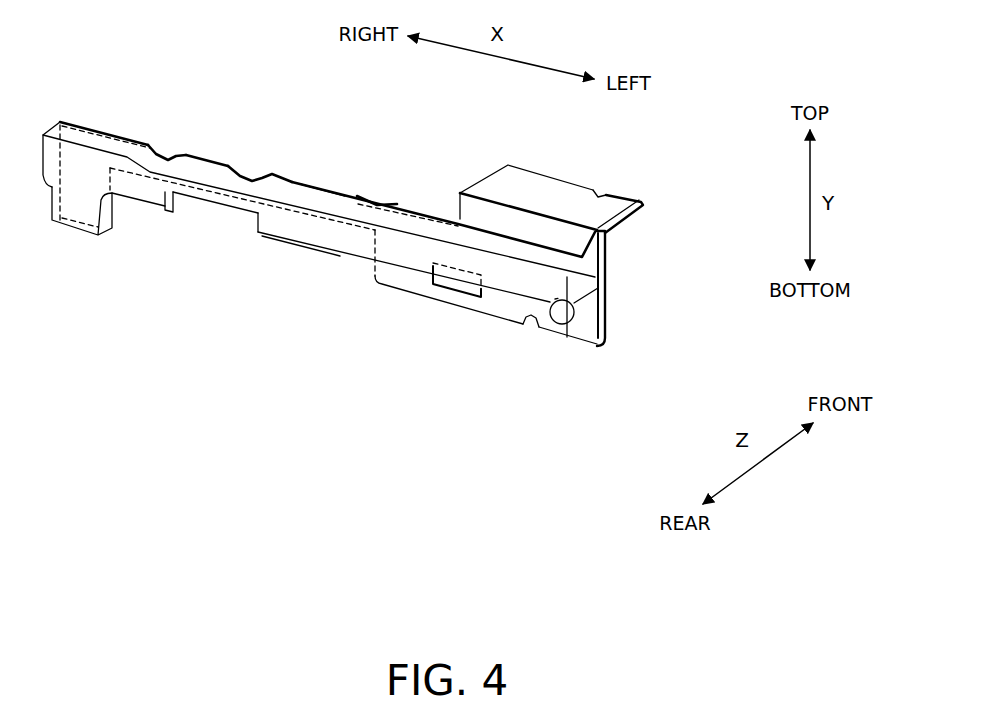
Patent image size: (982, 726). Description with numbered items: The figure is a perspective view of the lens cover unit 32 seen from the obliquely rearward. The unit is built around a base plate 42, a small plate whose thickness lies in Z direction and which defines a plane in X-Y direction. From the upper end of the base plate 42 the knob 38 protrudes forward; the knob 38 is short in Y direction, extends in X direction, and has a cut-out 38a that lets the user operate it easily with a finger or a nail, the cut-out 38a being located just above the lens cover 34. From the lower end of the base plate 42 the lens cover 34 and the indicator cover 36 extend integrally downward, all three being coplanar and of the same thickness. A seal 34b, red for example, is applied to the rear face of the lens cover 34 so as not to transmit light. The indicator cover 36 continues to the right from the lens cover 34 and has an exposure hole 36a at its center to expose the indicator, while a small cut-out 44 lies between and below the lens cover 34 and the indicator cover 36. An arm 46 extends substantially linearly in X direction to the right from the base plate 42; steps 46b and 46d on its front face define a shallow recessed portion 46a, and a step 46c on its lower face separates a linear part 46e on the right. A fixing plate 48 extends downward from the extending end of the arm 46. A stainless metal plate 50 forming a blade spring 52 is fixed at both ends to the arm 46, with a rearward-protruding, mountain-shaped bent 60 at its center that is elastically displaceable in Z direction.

The lens cover unit 32 is at (630, 351).
The lens cover 34 is at (562, 332).
The seal 34b is at (567, 337).
The indicator cover 36 is at (393, 284).
The exposure hole 36a is at (447, 298).
The knob 38 is at (541, 187).
The cut-out 38a is at (604, 196).
The base plate 42 is at (575, 240).
The small cut-out 44 is at (532, 335).
The arm 46 is at (328, 244).
The shallow recessed portion 46a is at (209, 172).
The step 46b is at (357, 196).
The step 46c is at (258, 229).
The step 46d is at (172, 152).
The linear part 46e is at (176, 197).
The fixing plate 48 is at (74, 212).
The metal plate 50 is at (353, 138).
The blade spring 52 is at (313, 192).
The bent 60 is at (263, 188).